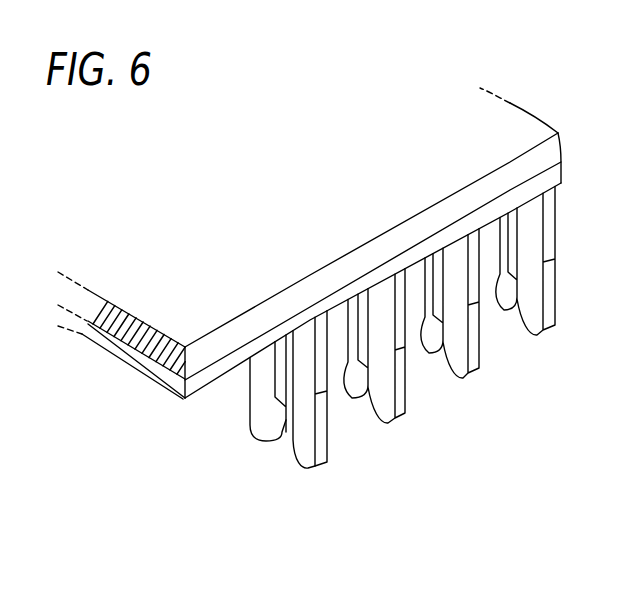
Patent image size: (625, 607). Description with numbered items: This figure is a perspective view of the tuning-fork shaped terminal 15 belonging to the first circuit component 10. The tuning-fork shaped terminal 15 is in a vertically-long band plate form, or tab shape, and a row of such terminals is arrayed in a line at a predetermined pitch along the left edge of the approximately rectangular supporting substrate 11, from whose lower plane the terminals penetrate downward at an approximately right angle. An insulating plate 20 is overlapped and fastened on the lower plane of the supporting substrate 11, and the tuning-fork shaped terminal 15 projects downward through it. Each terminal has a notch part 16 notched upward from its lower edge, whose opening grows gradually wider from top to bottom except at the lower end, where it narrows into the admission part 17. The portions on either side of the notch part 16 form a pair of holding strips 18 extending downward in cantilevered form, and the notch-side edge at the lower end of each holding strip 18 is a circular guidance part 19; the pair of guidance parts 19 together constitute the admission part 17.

The first circuit component 10 is at (513, 80).
The supporting substrate 11 is at (197, 357).
The tuning-fork shaped terminal 15 is at (371, 378).
The notch part 16 is at (281, 363).
The admission part 17 is at (299, 450).
The holding strip 18 is at (257, 378).
The guidance part 19 is at (277, 442).
The insulating plate 20 is at (150, 375).